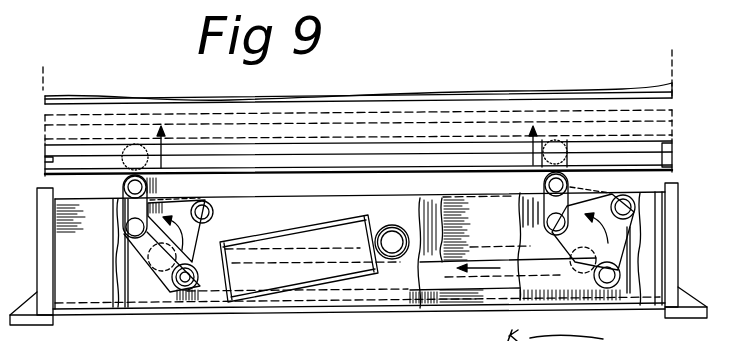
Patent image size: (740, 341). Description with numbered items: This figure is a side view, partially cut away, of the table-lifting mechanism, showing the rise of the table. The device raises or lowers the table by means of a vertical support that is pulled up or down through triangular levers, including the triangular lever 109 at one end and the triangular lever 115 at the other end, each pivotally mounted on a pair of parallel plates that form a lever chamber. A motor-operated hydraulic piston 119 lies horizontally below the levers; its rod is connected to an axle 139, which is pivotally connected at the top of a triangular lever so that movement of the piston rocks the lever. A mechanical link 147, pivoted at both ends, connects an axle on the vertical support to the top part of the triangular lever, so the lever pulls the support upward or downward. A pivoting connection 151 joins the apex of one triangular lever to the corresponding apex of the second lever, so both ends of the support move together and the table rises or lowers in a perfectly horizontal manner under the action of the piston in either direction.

The mechanical link 147 is at (120, 202).
The triangular lever 109 is at (188, 232).
The axle 139 is at (185, 290).
The hydraulic piston 119 is at (313, 267).
The pivoting connection 151 is at (450, 280).
The triangular lever 115 is at (598, 217).